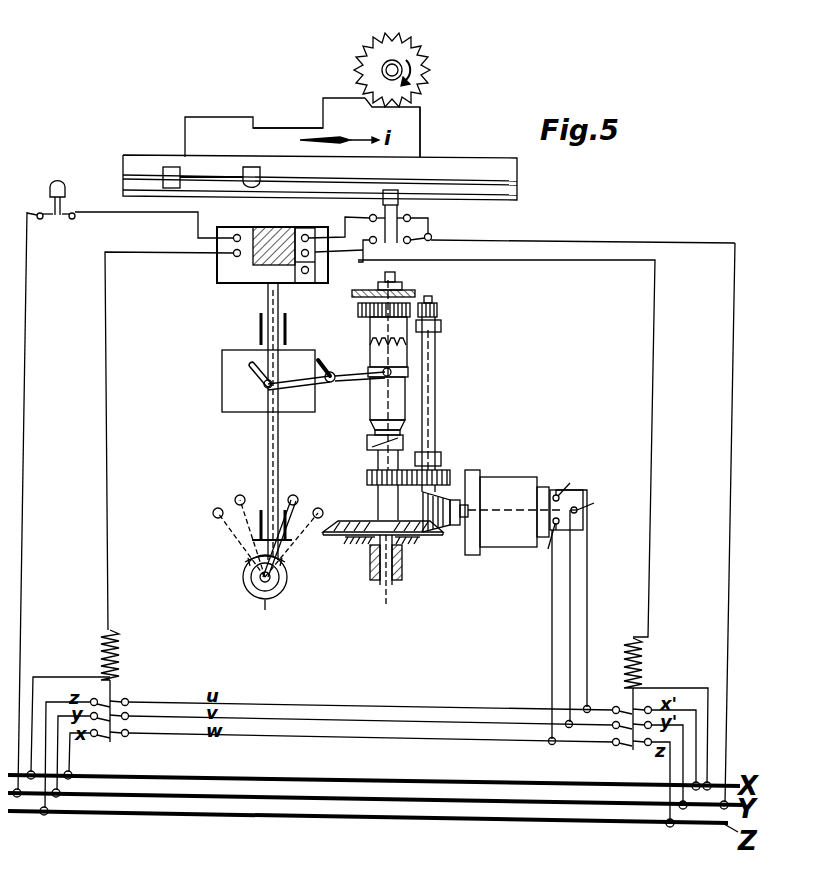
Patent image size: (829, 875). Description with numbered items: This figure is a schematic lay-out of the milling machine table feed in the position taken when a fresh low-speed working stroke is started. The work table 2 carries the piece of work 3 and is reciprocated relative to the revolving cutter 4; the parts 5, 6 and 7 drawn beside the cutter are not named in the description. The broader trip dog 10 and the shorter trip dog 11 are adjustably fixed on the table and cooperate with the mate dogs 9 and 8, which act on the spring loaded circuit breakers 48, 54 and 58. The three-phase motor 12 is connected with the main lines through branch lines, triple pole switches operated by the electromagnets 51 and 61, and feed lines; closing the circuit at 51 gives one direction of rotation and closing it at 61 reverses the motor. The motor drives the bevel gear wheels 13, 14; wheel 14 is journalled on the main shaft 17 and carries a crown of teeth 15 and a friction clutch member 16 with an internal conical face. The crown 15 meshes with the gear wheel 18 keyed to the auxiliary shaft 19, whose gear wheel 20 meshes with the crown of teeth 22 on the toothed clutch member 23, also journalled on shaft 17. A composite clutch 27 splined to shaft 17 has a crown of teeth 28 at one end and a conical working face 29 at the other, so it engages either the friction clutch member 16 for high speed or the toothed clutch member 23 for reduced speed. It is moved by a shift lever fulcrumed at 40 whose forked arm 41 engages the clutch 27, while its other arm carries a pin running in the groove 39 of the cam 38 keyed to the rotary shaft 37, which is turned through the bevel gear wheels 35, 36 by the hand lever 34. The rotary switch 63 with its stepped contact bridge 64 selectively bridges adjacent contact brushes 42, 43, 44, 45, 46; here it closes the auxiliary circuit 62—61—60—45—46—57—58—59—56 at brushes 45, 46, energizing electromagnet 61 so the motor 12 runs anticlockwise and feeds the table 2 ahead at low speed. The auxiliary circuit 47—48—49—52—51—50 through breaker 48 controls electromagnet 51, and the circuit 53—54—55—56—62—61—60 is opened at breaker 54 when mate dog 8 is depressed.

The work table 2 is at (517, 171).
The piece of work 3 is at (420, 134).
The revolving cutter 4 is at (428, 66).
The cutter head 5 is at (337, 99).
The slide body 6 is at (233, 117).
The slide step 7 is at (294, 134).
The mate dog 8 is at (393, 194).
The mate dog 9 is at (65, 190).
The broader trip dog 10 is at (170, 182).
The shorter trip dog 11 is at (258, 177).
The electric three-phase current motor 12 is at (513, 486).
The bevel gear wheel 13 is at (440, 533).
The bevel gear wheel 14 is at (406, 537).
The crown of teeth 15 is at (374, 486).
The friction clutch member 16 is at (373, 476).
The rotary shaft 17 is at (376, 540).
The gear wheel 18 is at (446, 476).
The auxiliary shaft 19 is at (435, 405).
The gear wheel 20 is at (440, 310).
The crown of teeth 22 is at (358, 310).
The toothed clutch member 23 is at (371, 342).
The composite clutch 27 is at (372, 405).
The crown of teeth 28 is at (375, 368).
The conical working face 29 is at (370, 439).
The hand lever 34 is at (284, 556).
The bevel gear wheel 35 is at (278, 591).
The bevel gear wheel 36 is at (250, 562).
The rotary shaft 37 is at (267, 456).
The grooved cam 38 is at (235, 400).
The cam groove 39 is at (250, 367).
The fulcrum 40 is at (329, 371).
The forked arm 41 is at (347, 378).
The contact brush 42 is at (236, 235).
The contact brush 43 is at (234, 255).
The contact brush 44 is at (309, 236).
The contact brush 45 is at (318, 253).
The contact brush 46 is at (305, 275).
The auxiliary circuit conductor 47 is at (172, 213).
The spring loaded circuit breaker 48 is at (74, 219).
The auxiliary circuit conductor 49 is at (27, 393).
The auxiliary circuit conductor 50 is at (105, 393).
The electromagnet 51 is at (118, 655).
The auxiliary circuit conductor 52 is at (64, 677).
The auxiliary circuit conductor 53 is at (368, 226).
The spring loaded circuit breaker 54 is at (415, 227).
The auxiliary circuit conductor 55 is at (431, 222).
The auxiliary circuit conductor 56 is at (597, 243).
The auxiliary circuit conductor 57 is at (358, 291).
The spring loaded circuit breaker 58 is at (377, 243).
The auxiliary circuit conductor 59 is at (420, 245).
The auxiliary circuit conductor 60 is at (653, 403).
The electromagnet 61 is at (640, 660).
The auxiliary circuit conductor 62 is at (695, 688).
The rotary switch 63 is at (232, 283).
The stepped contact bridge 64 is at (285, 227).